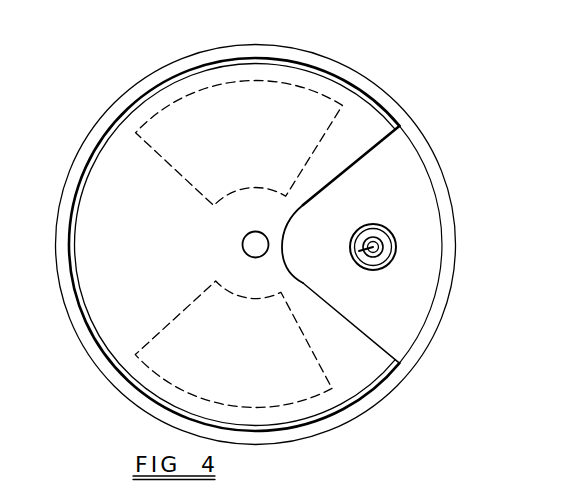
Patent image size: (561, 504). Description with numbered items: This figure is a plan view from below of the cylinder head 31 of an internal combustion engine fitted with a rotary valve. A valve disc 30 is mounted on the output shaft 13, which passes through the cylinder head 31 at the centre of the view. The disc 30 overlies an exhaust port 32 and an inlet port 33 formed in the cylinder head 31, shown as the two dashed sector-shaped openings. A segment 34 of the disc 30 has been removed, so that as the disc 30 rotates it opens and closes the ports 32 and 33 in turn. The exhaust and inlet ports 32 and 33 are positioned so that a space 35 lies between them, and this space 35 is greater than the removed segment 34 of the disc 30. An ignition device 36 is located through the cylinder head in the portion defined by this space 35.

The output shaft 13 is at (245, 243).
The valve disc 30 is at (116, 312).
The cylinder head 31 is at (128, 91).
The exhaust port 32 is at (313, 390).
The inlet port 33 is at (298, 98).
The segment 34 is at (385, 139).
The space 35 is at (418, 202).
The ignition device 36 is at (381, 250).